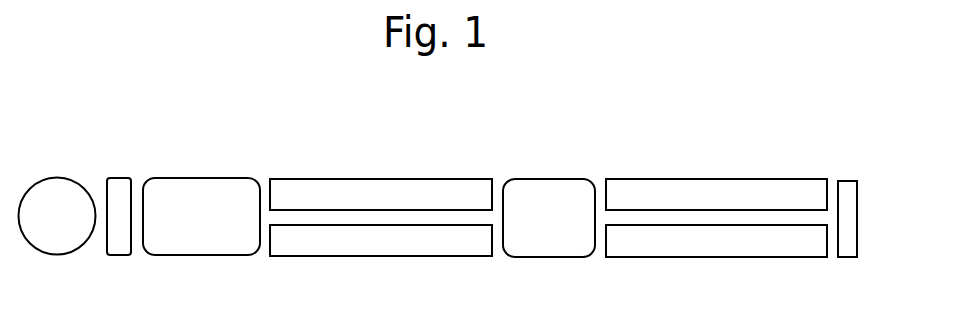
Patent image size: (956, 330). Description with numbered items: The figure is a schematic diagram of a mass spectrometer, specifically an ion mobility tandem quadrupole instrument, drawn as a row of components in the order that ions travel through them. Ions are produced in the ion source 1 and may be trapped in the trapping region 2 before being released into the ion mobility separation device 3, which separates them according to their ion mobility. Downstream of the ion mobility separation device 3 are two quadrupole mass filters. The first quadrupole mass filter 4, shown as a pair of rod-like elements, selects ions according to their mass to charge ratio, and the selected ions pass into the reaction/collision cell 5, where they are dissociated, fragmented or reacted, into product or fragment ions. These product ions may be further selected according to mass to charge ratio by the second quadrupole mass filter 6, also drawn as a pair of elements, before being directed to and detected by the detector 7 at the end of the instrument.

The ion source 1 is at (60, 178).
The trapping region 2 is at (118, 178).
The ion mobility separation device 3 is at (200, 178).
The first quadrupole mass filter (Q1) 4 is at (346, 179).
The reaction/collision cell 5 is at (552, 179).
The second quadrupole mass filter (Q2) 6 is at (662, 179).
The detector 7 is at (846, 181).